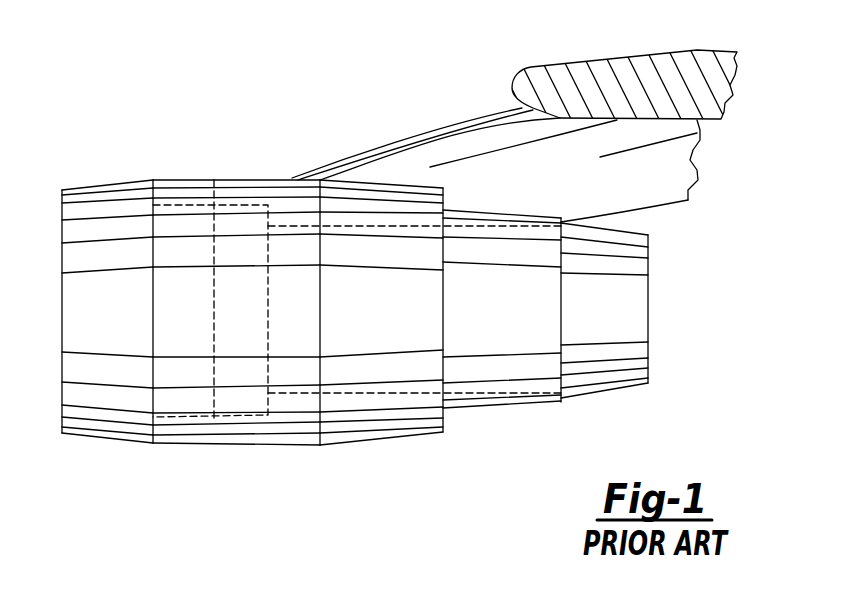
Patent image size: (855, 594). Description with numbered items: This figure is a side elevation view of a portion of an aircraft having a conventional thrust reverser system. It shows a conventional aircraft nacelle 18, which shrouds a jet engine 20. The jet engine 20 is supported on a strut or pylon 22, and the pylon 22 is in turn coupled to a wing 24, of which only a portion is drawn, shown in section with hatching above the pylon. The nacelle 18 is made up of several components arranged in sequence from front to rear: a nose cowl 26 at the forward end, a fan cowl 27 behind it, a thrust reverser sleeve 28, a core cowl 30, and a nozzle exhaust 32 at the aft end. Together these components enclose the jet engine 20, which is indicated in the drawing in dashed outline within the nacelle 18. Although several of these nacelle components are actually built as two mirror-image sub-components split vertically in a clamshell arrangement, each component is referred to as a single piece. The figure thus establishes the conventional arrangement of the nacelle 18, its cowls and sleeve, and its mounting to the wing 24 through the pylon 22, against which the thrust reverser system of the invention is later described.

The aircraft nacelle 18 is at (151, 162).
The jet engine 20 is at (214, 180).
The pylon 22 is at (397, 150).
The wing 24 is at (664, 56).
The nose cowl 26 is at (88, 214).
The fan cowl 27 is at (270, 178).
The thrust reverser sleeve 28 is at (337, 218).
The core cowl 30 is at (472, 210).
The nozzle exhaust 32 is at (632, 298).